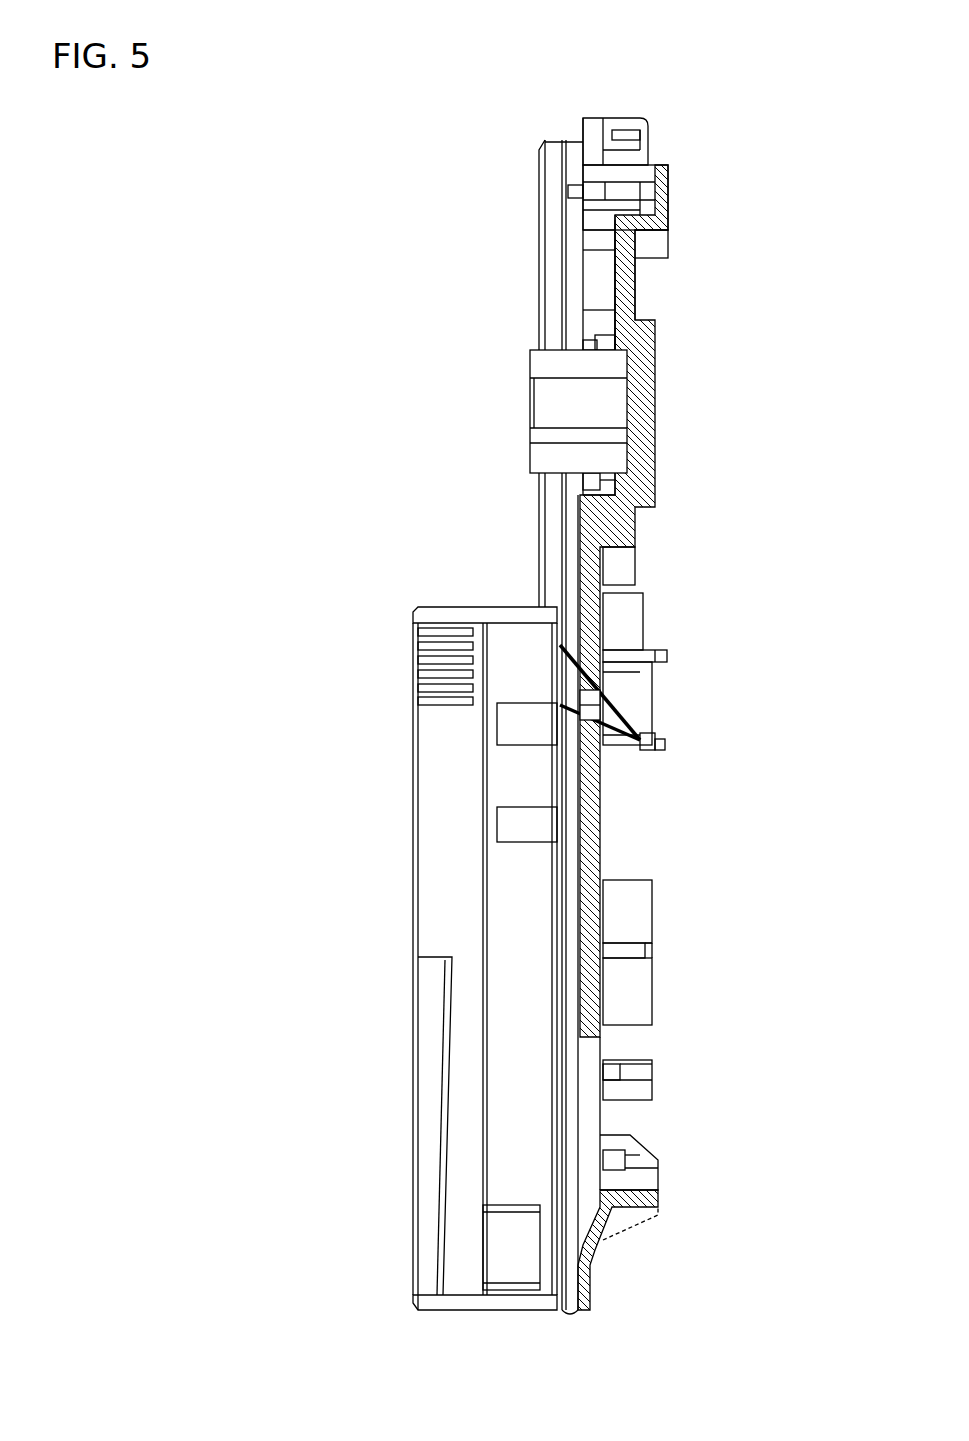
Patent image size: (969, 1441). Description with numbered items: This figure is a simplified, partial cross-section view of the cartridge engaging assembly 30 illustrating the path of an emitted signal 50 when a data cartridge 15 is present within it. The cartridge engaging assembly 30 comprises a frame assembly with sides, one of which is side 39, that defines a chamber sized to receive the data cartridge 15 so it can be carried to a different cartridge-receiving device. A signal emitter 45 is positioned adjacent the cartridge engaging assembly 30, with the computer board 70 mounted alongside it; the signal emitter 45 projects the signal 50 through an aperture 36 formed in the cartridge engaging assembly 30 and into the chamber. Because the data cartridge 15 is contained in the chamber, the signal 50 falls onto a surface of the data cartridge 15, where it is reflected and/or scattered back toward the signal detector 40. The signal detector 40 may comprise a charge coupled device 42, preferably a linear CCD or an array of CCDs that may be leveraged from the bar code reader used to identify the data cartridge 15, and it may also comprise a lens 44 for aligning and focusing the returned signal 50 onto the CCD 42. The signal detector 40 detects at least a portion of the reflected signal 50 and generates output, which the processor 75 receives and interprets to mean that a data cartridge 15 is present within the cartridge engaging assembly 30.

The data cartridge 15 is at (410, 907).
The cartridge engaging assembly 30 is at (695, 88).
The aperture 36 is at (603, 663).
The side 39 is at (640, 322).
The signal detector 40 is at (485, 238).
The charge coupled device (CCD) 42 is at (642, 165).
The lens 44 is at (530, 398).
The signal emitter 45 is at (655, 740).
The signal 50 is at (620, 740).
The computer board 70 is at (605, 880).
The processor 75 is at (648, 1012).